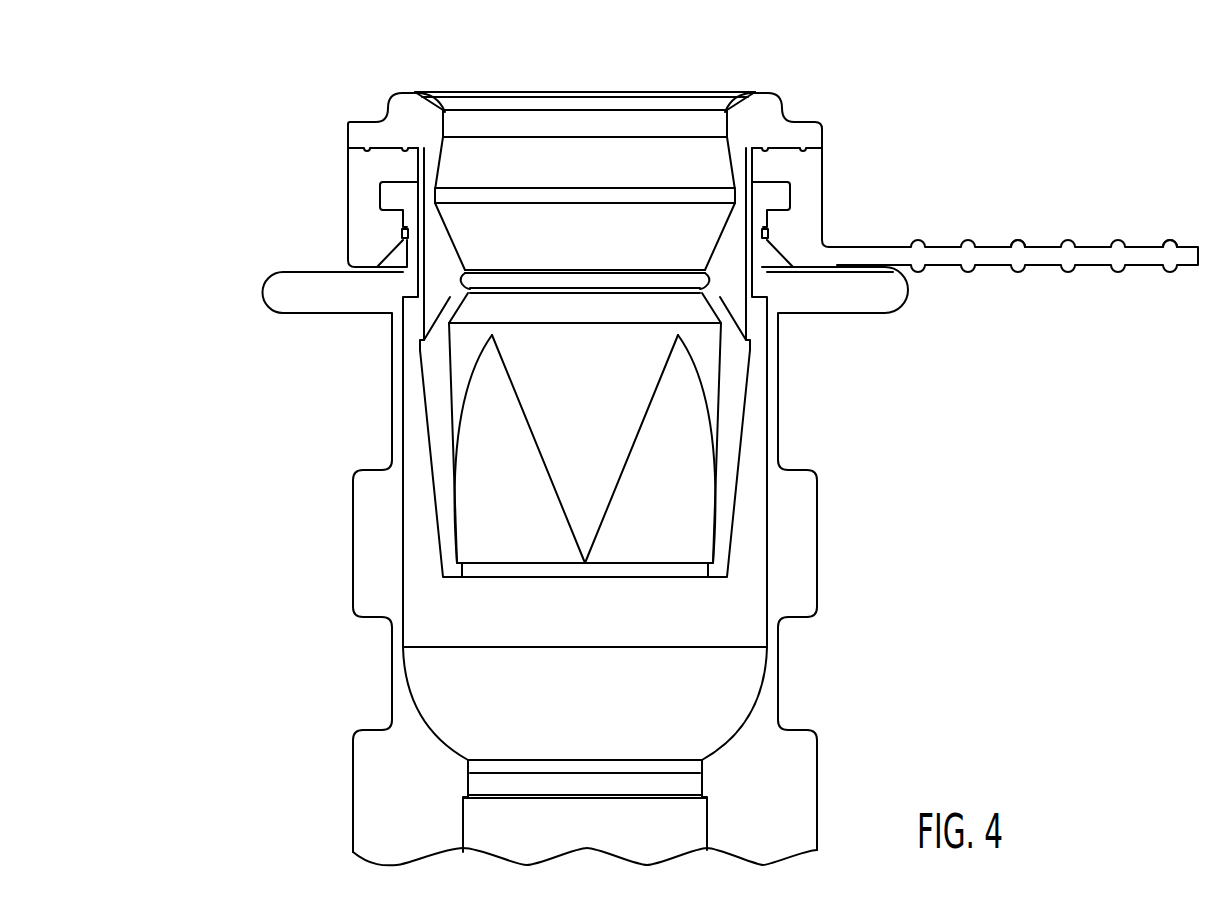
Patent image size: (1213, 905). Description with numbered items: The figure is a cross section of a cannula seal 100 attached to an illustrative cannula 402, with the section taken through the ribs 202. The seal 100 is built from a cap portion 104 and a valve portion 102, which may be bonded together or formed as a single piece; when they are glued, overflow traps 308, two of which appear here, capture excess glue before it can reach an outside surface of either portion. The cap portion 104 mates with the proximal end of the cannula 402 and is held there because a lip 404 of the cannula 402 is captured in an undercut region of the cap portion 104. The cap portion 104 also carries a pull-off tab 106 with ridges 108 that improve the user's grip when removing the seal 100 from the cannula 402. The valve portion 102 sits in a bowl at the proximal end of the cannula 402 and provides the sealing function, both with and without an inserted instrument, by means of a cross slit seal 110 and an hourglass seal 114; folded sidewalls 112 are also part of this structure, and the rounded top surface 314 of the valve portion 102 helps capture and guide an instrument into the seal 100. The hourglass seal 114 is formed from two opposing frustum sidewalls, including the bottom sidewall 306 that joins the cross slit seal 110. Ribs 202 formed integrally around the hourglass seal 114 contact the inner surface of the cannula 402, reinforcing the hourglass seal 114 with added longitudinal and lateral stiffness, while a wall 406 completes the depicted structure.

The cannula seal 100 is at (190, 100).
The valve portion 102 is at (437, 372).
The cap portion 104 is at (363, 198).
The pull-off tab 106 is at (1140, 270).
The ridges 108 is at (1170, 245).
The cross slit seal 110 is at (522, 568).
The folded sidewalls 112 is at (600, 458).
The hourglass seal 114 is at (487, 283).
The ribs 202 is at (713, 283).
The bottom sidewall 306 is at (392, 222).
The overflow traps 308 is at (803, 152).
The top surface 314 is at (697, 100).
The cannula 402 is at (396, 790).
The lip 404 is at (403, 188).
The side wall 406 is at (767, 552).